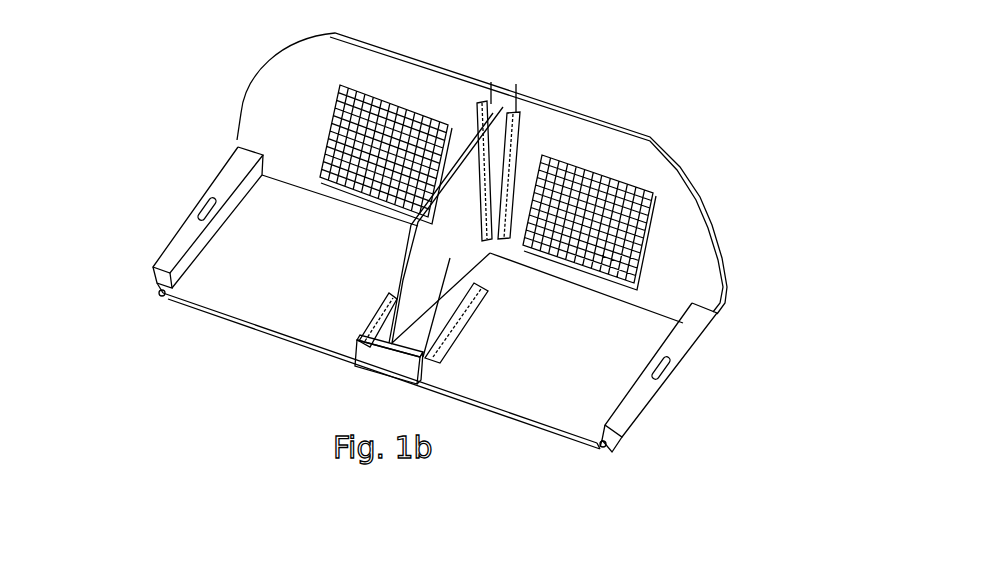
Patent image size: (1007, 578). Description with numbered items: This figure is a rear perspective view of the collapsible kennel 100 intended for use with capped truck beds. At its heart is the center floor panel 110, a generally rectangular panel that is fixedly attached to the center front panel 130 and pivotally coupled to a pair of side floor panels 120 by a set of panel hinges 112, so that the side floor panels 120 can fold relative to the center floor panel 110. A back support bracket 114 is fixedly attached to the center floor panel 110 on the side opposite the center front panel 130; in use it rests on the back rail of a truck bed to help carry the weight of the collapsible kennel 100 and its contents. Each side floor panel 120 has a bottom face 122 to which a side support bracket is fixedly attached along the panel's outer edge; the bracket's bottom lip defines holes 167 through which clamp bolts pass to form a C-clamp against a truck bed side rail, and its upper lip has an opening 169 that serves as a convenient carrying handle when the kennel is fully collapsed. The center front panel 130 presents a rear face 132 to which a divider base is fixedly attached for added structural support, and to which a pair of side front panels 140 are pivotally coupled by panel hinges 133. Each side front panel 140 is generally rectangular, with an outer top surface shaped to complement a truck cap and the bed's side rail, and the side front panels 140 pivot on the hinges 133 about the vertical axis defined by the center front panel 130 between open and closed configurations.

The collapsible kennel 100 is at (437, 280).
The center floor panel 110 is at (440, 313).
The panel hinges 112 is at (478, 310).
The back support bracket 114 is at (365, 368).
The side floor panels 120 is at (417, 350).
The bottom face 122 is at (197, 313).
The center front panel 130 is at (499, 128).
The rear face 132 is at (503, 100).
The panel hinges 133 is at (522, 124).
The side front panels 140 is at (243, 70).
The holes 167 is at (159, 293).
The opening 169 is at (202, 205).